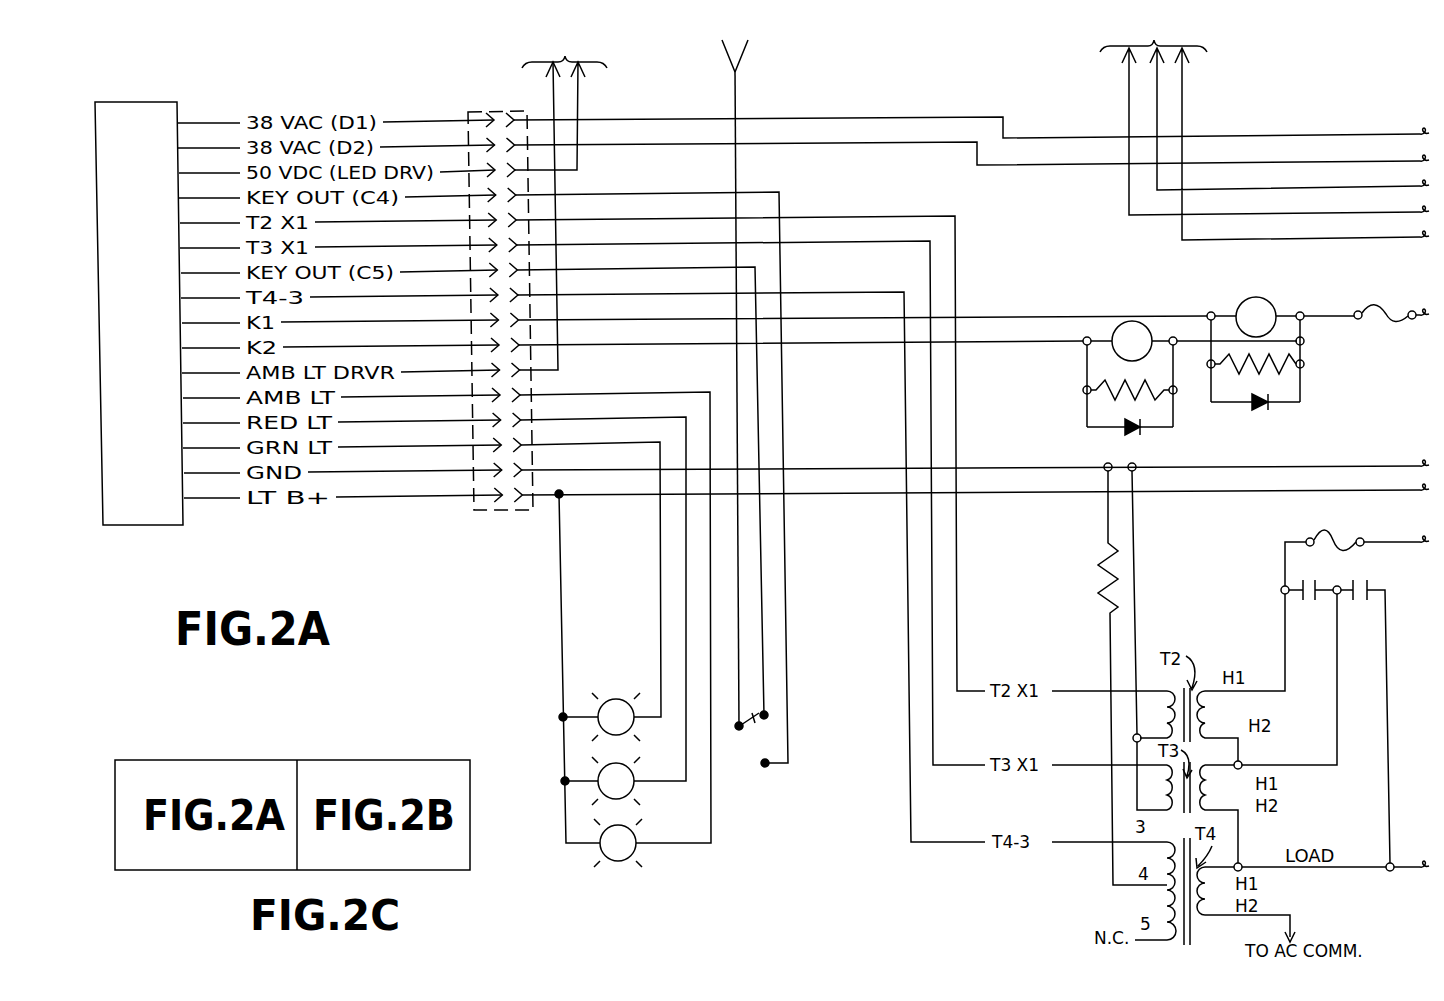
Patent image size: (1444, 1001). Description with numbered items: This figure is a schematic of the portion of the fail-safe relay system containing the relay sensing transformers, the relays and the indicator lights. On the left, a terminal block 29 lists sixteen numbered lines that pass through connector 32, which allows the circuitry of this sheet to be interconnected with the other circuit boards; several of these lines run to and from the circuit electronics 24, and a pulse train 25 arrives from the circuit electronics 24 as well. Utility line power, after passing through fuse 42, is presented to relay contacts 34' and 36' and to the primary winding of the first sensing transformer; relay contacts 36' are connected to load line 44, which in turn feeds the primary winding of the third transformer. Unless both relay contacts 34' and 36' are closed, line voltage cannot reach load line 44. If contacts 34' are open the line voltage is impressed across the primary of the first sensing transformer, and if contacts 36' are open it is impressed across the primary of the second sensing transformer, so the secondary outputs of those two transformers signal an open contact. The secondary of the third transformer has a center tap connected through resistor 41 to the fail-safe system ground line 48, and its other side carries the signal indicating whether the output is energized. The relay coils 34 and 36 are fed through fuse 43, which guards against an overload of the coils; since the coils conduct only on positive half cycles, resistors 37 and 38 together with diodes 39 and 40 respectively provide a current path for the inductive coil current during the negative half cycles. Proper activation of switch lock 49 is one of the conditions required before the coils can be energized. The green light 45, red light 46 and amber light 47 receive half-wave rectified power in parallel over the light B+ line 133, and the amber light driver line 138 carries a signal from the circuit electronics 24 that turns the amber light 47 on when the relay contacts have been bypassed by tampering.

The circuit electronics 24 is at (972, 125).
The pulse train line 25 is at (737, 71).
The terminal block 29 is at (150, 527).
The connector 32 is at (524, 512).
The relay coil 34 is at (1169, 341).
The relay coil 36 is at (1280, 302).
The resistor 37 is at (1102, 397).
The resistor 38 is at (1302, 376).
The diode 39 is at (1124, 431).
The diode 40 is at (1256, 410).
The resistor 41 is at (1102, 576).
The fuse 42 is at (1332, 532).
The fuse 43 is at (1412, 320).
The load line 44 is at (1392, 870).
The green light 45 is at (608, 697).
The red light 46 is at (626, 760).
The amber light 47 is at (635, 828).
The fail-safe system ground line 48 is at (974, 467).
The switch lock 49 is at (756, 754).
The light B+ line 133 is at (596, 498).
The amber light driver line 138 is at (560, 360).
The relay contacts 34' is at (1307, 618).
The relay contacts 36' is at (1361, 721).